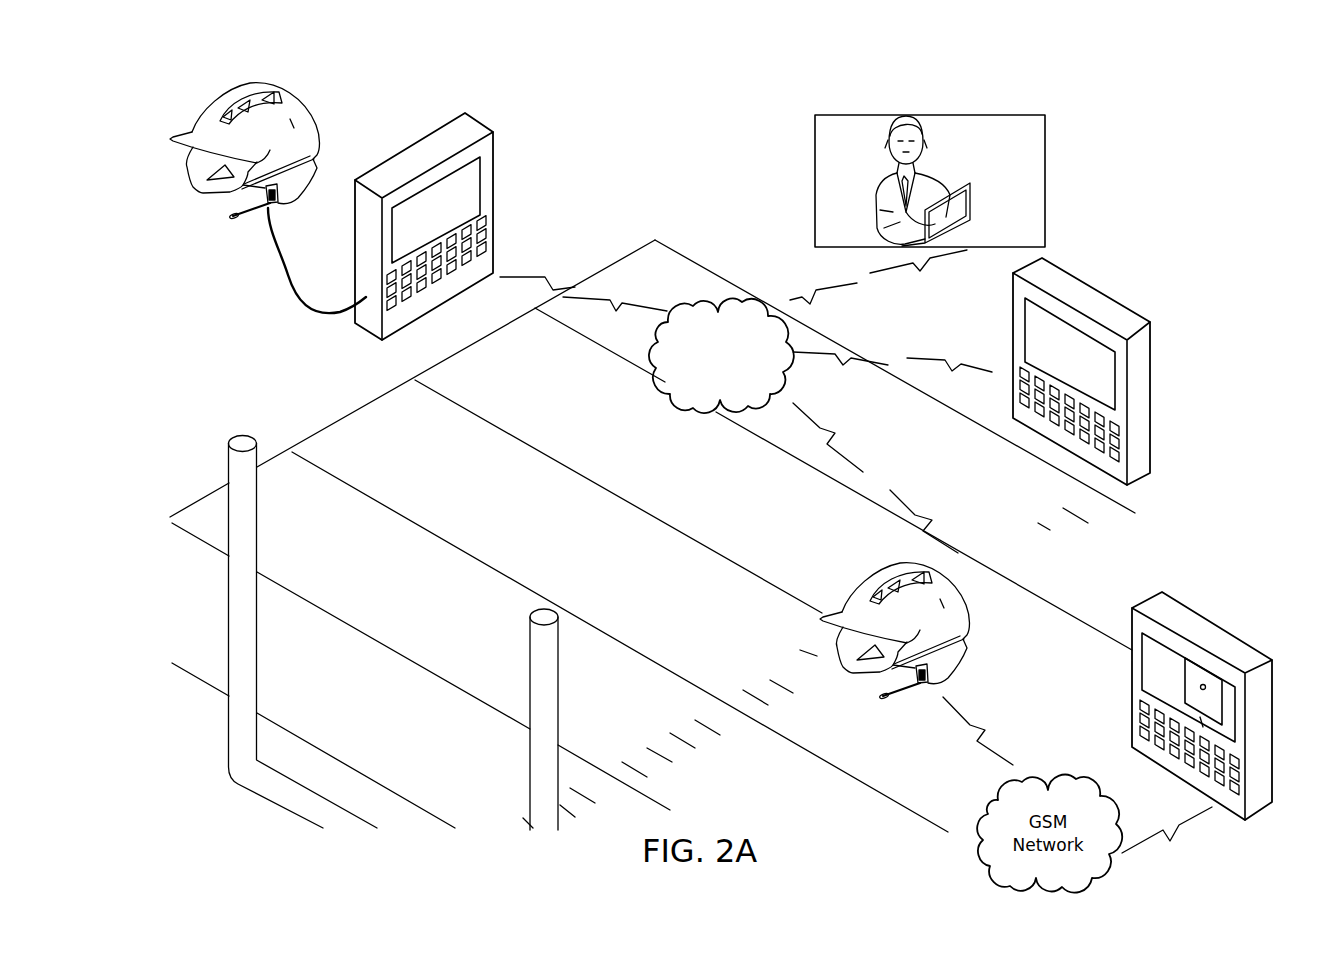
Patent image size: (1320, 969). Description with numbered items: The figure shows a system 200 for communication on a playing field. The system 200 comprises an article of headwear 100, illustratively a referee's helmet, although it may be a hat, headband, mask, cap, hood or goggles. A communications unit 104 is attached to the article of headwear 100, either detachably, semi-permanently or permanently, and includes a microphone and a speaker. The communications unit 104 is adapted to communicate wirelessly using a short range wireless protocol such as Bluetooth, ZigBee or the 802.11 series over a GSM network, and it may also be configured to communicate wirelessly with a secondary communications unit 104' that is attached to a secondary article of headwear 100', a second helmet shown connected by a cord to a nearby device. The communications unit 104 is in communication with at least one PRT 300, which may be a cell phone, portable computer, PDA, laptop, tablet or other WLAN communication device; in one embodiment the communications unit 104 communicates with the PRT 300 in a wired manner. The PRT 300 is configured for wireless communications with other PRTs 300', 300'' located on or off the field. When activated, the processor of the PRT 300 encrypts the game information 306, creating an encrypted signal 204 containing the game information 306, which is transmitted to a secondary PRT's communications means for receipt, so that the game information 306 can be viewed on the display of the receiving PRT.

The article of headwear 100 is at (930, 657).
The secondary article of headwear 100' is at (280, 198).
The communications unit 104 is at (903, 708).
The secondary communications unit 104' is at (243, 237).
The system 200 is at (702, 187).
The encrypted signal 204 is at (733, 303).
The PRT 300 is at (1174, 706).
The PRT 300' is at (462, 226).
The PRT 300'' is at (1081, 352).
The game information 306 is at (1222, 687).